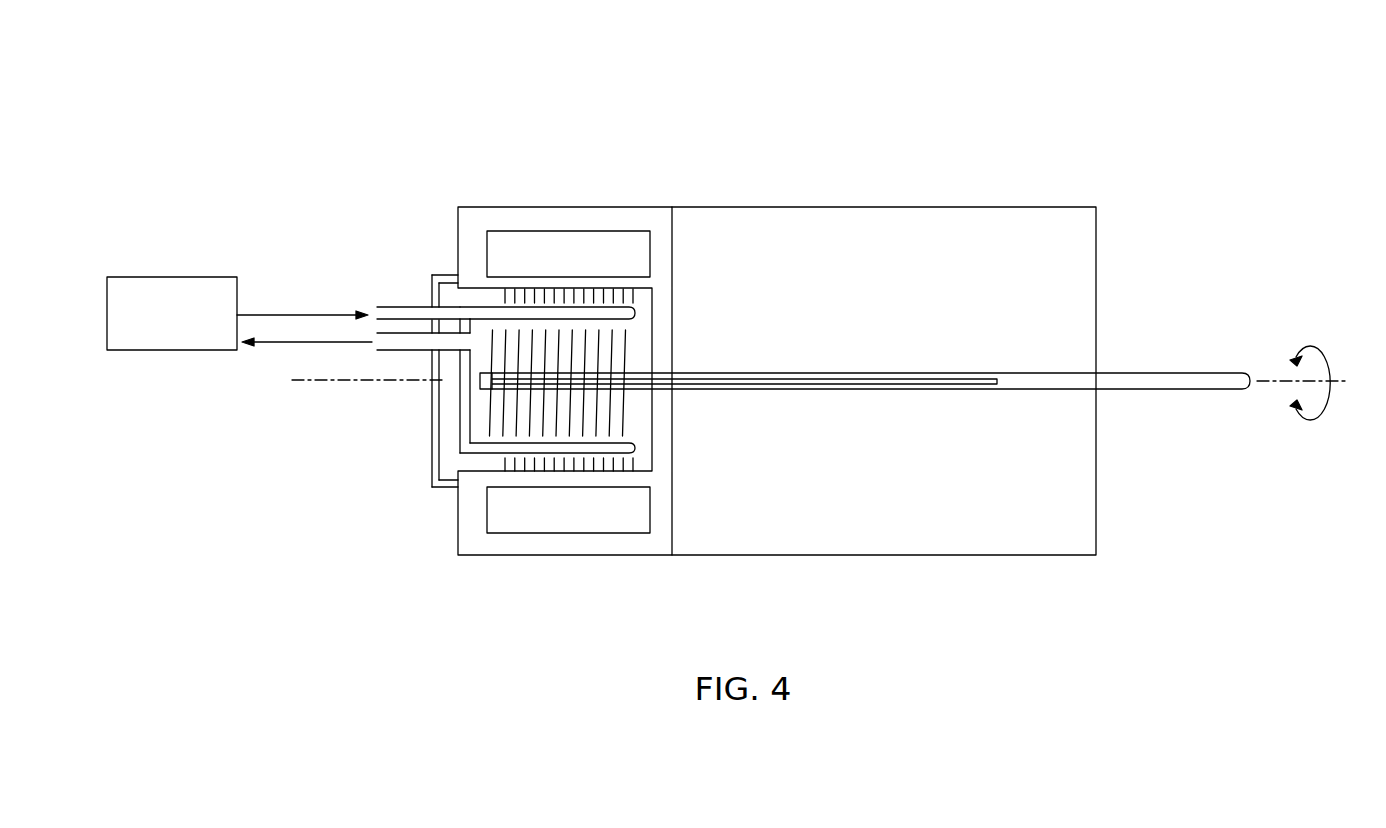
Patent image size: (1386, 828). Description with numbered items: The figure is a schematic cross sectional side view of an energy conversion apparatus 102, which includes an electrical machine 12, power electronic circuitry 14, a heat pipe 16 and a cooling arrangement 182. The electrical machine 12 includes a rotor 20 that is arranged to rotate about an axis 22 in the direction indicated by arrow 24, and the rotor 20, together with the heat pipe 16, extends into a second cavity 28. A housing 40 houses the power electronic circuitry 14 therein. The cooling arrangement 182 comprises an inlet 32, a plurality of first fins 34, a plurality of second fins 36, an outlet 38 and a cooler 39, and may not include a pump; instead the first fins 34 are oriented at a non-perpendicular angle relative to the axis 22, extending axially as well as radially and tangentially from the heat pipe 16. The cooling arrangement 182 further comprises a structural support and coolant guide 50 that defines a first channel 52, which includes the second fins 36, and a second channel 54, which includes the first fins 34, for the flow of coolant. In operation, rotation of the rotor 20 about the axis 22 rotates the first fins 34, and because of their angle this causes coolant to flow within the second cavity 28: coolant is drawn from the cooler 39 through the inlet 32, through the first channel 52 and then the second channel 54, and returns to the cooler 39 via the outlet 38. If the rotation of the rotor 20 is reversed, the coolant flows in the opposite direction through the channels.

The electrical machine 12 is at (913, 587).
The power electronic circuitry 14 is at (515, 257).
The heat pipe 16 is at (902, 373).
The rotor 20 is at (1168, 373).
The axis 22 is at (1273, 390).
The arrow 24 is at (1322, 350).
The second cavity 28 is at (640, 342).
The inlet 32 is at (370, 312).
The plurality of first fins 34 is at (500, 410).
The plurality of second fins 36 is at (505, 467).
The outlet 38 is at (378, 345).
The cooler 39 is at (143, 352).
The housing 40 is at (547, 206).
The structural support and coolant guide 50 is at (433, 450).
The first channel 52 is at (648, 300).
The second channel 54 is at (633, 408).
The energy conversion apparatus 102 is at (1253, 104).
The cooling arrangement 182 is at (221, 541).